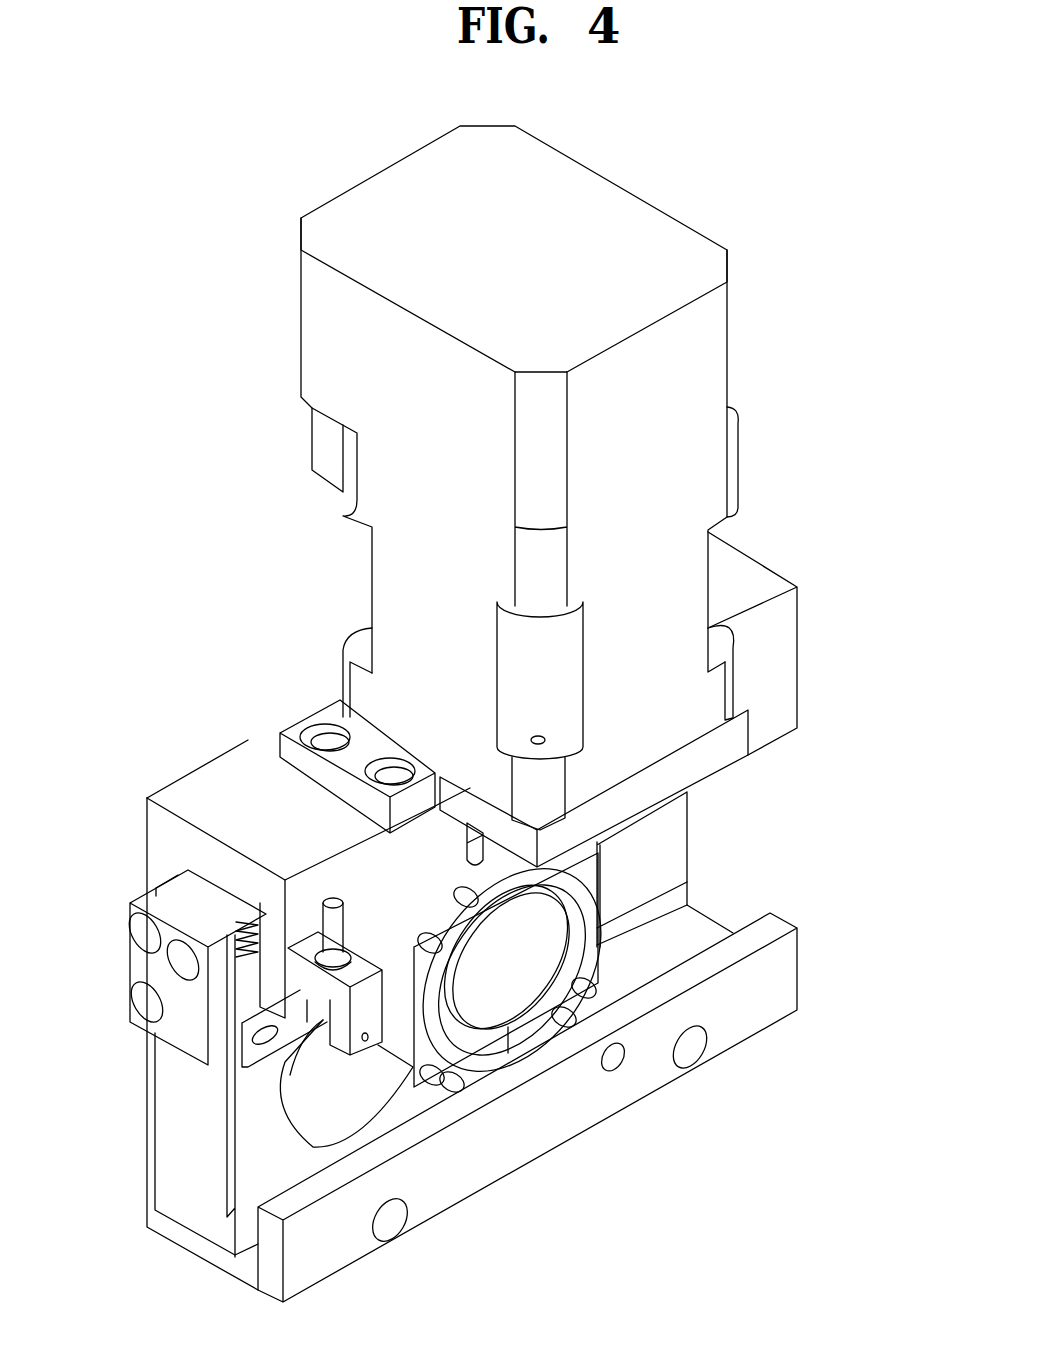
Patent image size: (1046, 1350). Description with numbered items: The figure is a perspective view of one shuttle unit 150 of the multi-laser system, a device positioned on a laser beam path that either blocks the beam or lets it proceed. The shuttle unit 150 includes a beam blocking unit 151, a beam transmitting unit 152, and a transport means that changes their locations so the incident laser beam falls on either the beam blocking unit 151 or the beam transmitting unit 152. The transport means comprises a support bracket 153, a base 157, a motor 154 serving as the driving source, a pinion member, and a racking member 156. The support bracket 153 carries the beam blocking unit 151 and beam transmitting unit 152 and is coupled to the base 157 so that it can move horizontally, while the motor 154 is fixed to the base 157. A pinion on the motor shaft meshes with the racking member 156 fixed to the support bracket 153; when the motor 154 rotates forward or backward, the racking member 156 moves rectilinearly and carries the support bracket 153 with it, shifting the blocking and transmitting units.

The shuttle unit 150 is at (148, 250).
The beam blocking unit 151 is at (505, 957).
The beam transmitting unit 152 is at (323, 1088).
The support bracket 153 is at (182, 1127).
The motor 154 is at (638, 227).
The racking member 156 is at (247, 938).
The base 157 is at (758, 663).